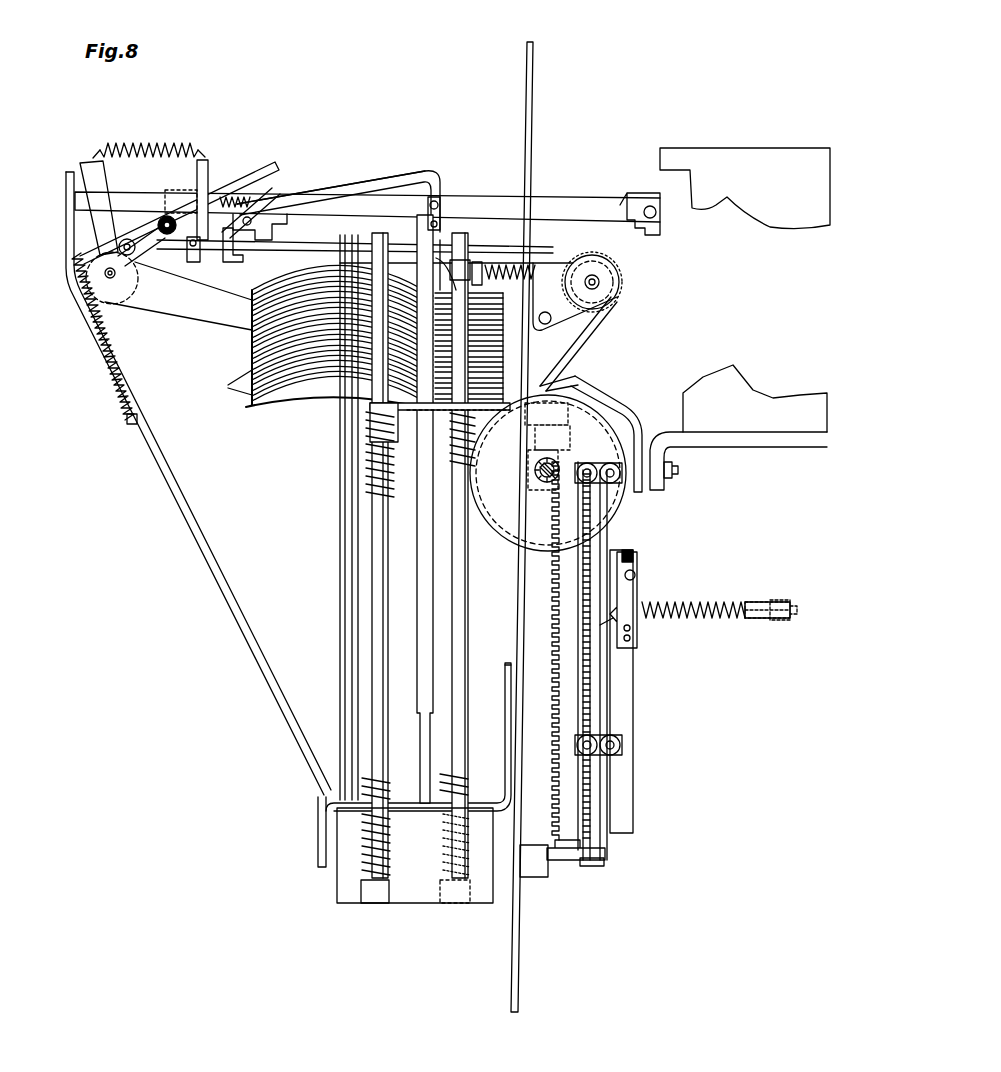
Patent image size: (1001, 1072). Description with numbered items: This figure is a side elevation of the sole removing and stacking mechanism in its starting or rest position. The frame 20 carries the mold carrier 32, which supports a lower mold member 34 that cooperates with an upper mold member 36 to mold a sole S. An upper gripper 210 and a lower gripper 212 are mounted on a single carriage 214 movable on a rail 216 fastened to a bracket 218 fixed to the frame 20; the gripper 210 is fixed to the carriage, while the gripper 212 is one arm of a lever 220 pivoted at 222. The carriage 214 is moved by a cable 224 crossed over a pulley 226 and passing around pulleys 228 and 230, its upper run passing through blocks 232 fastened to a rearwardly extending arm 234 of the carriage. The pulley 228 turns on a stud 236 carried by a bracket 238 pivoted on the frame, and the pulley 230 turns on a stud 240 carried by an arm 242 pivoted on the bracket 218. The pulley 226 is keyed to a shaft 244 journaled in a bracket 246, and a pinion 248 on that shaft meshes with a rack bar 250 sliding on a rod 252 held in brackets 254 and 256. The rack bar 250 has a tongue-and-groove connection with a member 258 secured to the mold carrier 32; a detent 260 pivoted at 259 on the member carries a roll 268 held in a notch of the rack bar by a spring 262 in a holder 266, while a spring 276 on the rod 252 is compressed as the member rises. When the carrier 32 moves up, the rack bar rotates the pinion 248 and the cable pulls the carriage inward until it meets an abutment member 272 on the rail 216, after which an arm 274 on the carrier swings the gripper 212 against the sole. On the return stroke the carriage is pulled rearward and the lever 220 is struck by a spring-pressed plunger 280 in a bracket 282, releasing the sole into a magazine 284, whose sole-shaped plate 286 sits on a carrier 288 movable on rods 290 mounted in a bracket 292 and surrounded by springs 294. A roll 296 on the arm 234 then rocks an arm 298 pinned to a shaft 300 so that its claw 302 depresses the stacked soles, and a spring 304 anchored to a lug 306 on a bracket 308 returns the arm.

The frame 20 is at (533, 76).
The mold carrier 32 is at (762, 448).
The lower mold member 34 is at (750, 385).
The upper mold member 36 is at (772, 226).
The upper gripper 210 is at (287, 225).
The lower gripper 212 is at (238, 262).
The carriage 214 is at (275, 168).
The rail 216 is at (393, 195).
The bracket 218 is at (490, 175).
The lever 220 is at (275, 200).
The pivot 222 is at (300, 220).
The cable 224 is at (598, 338).
The pulley 226 is at (510, 520).
The pulley 228 is at (618, 300).
The pulley 230 is at (140, 302).
The blocks 232 is at (193, 262).
The arm 234 is at (140, 258).
The stud 236 is at (600, 282).
The bracket 238 is at (552, 270).
The stud 240 is at (112, 300).
The arm 242 is at (102, 187).
The shaft 244 is at (555, 460).
The bracket 246 is at (570, 495).
The pinion 248 is at (535, 472).
The rack bar 250 is at (552, 573).
The rod 252 is at (608, 852).
The bracket 254 is at (592, 866).
The bracket 256 is at (582, 395).
The member 258 is at (640, 695).
The pivot 259 is at (636, 572).
The detent 260 is at (637, 592).
The spring 262 is at (722, 600).
The holder 266 is at (785, 600).
The roll 268 is at (615, 620).
The abutment member 272 is at (640, 195).
The arm 274 is at (630, 420).
The spring 276 is at (600, 790).
The spring-pressed plunger 280 is at (208, 190).
The bracket 282 is at (222, 155).
The magazine 284 is at (288, 570).
The sole-shaped plate 286 is at (290, 400).
The carrier 288 is at (370, 420).
The rods 290 is at (380, 585).
The bracket 292 is at (415, 895).
The springs 294 is at (368, 470).
The roll 296 is at (127, 238).
The arm 298 is at (345, 168).
The shaft 300 is at (170, 215).
The claw 302 is at (455, 270).
The spring 304 is at (125, 380).
The lug 306 is at (137, 416).
The bracket 308 is at (190, 520).
The sole S is at (231, 384).